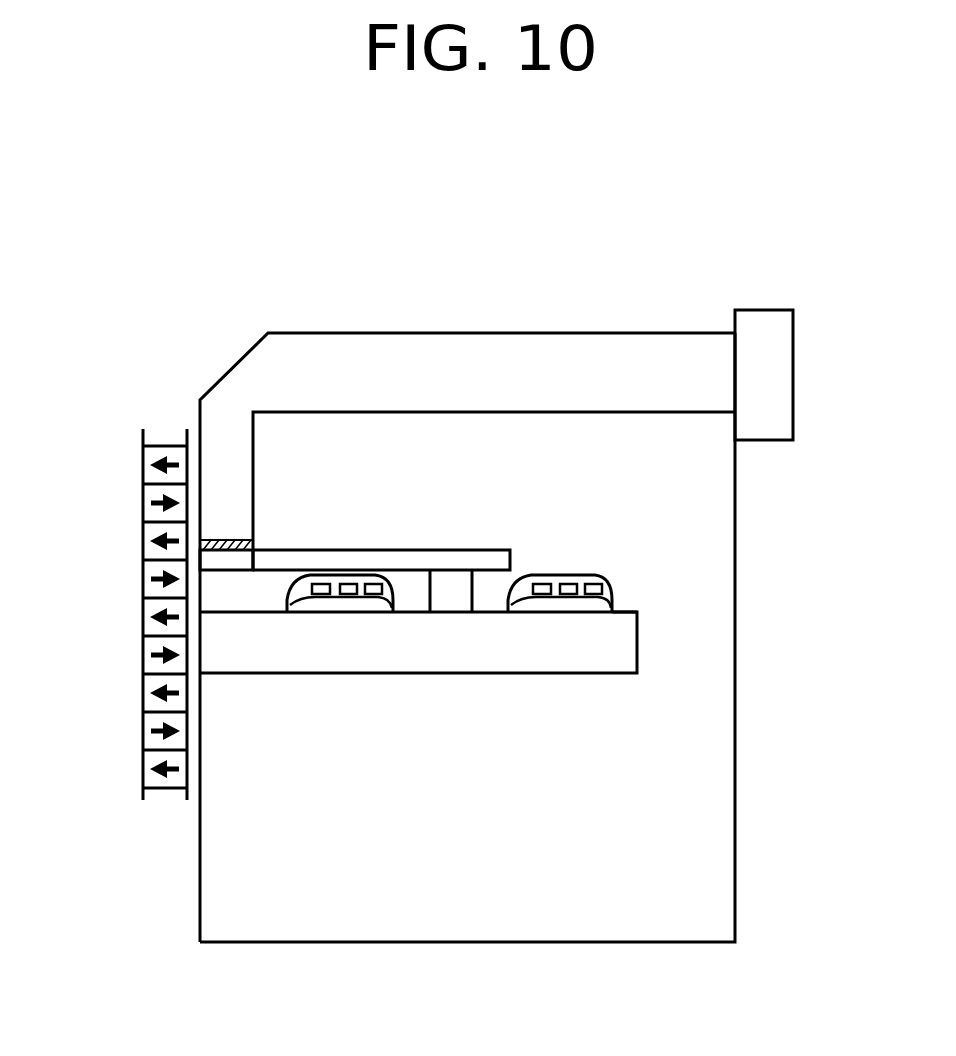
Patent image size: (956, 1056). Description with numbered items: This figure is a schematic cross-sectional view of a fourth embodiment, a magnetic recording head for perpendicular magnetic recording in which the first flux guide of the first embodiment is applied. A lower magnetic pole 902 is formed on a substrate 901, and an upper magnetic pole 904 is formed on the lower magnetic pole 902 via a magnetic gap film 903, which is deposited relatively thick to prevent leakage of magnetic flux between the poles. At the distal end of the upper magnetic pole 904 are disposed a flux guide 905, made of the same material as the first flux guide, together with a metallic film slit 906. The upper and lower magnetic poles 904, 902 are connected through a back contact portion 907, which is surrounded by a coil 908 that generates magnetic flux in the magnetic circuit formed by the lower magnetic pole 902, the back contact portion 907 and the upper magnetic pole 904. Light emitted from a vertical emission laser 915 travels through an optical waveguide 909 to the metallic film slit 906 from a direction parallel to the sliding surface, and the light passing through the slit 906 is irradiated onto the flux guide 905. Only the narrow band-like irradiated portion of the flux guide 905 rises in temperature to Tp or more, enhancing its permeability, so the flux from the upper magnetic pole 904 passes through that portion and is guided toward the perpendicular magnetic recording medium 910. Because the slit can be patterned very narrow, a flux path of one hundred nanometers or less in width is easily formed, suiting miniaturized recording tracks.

The substrate 901 is at (453, 880).
The lower magnetic pole 902 is at (521, 647).
The magnetic gap film 903 is at (622, 602).
The upper magnetic pole 904 is at (482, 558).
The flux guide 905 is at (235, 558).
The metallic film slit 906 is at (237, 540).
The back contact portion 907 is at (452, 600).
The coil 908 is at (365, 598).
The optical waveguide 909 is at (252, 400).
The perpendicular magnetic recording medium 910 is at (143, 553).
The vertical emission laser 915 is at (757, 327).